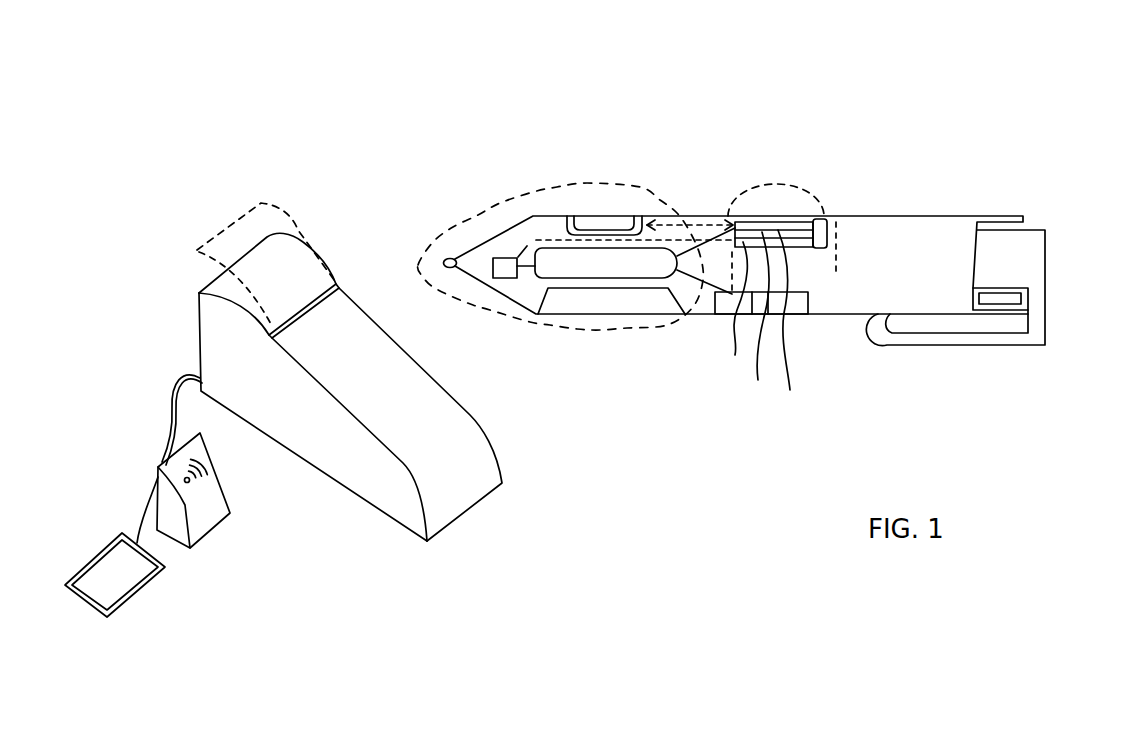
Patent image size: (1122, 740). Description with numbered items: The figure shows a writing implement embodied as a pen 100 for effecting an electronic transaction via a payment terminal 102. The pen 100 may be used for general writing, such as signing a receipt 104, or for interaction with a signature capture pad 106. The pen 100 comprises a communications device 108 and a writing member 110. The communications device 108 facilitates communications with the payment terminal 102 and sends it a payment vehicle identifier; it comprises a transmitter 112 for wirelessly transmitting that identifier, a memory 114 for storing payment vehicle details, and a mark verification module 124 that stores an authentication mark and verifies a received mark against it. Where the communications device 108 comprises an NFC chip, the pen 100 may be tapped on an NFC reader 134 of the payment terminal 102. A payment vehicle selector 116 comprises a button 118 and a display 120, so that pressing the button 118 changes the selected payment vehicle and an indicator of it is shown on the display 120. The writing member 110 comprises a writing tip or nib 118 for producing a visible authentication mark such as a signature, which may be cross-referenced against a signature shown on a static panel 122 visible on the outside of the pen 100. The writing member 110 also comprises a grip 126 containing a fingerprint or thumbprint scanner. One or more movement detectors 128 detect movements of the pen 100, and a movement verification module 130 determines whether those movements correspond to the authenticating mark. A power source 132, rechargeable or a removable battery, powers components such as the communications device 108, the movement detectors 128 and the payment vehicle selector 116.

The pen 100 is at (862, 193).
The payment terminal 102 is at (337, 538).
The receipt 104 is at (263, 210).
The signature capture pad 106 is at (125, 578).
The communications device 108 is at (778, 187).
The writing member 110 is at (593, 330).
The transmitter 112 is at (760, 318).
The memory 114 is at (740, 310).
The payment vehicle selector 116 is at (718, 314).
The writing tip or nib 118 is at (447, 257).
The display 120 is at (725, 302).
The panel 122 is at (562, 303).
The mark verification module 124 is at (796, 324).
The grip 126 is at (603, 216).
The movement detector 128 is at (505, 278).
The movement verification module 130 is at (823, 216).
The power source 132 is at (635, 257).
The NFC reader 134 is at (218, 505).